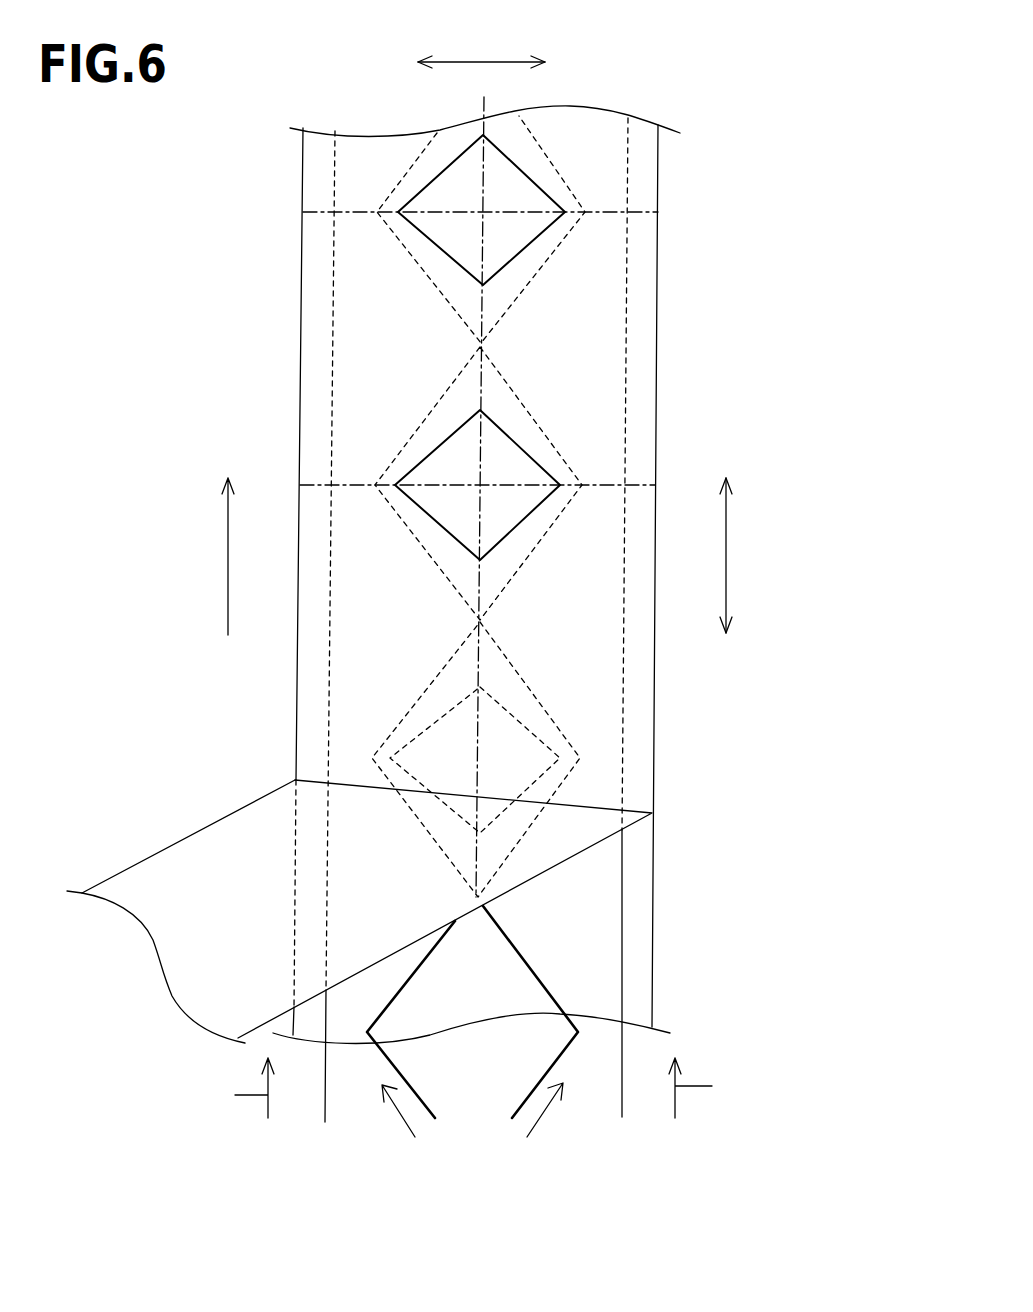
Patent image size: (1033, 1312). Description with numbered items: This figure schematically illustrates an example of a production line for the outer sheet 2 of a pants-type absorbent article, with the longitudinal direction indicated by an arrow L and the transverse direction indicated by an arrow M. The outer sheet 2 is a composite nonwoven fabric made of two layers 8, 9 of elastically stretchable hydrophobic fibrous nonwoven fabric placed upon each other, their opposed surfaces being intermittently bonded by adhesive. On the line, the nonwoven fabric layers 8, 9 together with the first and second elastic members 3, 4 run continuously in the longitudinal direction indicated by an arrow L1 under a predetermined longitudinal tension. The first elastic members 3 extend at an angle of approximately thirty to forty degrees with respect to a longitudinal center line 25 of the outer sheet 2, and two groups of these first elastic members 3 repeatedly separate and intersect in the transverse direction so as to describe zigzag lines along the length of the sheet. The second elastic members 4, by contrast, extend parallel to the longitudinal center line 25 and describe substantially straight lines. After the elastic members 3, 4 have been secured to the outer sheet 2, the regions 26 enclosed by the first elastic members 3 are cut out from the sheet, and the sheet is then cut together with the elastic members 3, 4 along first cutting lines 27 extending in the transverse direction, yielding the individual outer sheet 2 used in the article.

The outer sheet 2 is at (633, 872).
The first elastic members 3 is at (387, 1058).
The second elastic members 4 is at (622, 965).
The nonwoven fabric layer 8 is at (242, 832).
The nonwoven fabric layer 9 is at (602, 918).
The longitudinal center line 25 is at (478, 667).
The regions enclosed by the first elastic members 26 is at (525, 743).
The first cutting lines 27 is at (608, 211).
The transverse direction arrow M is at (487, 62).
The longitudinal direction arrow L is at (727, 565).
The running direction arrow L1 is at (228, 560).